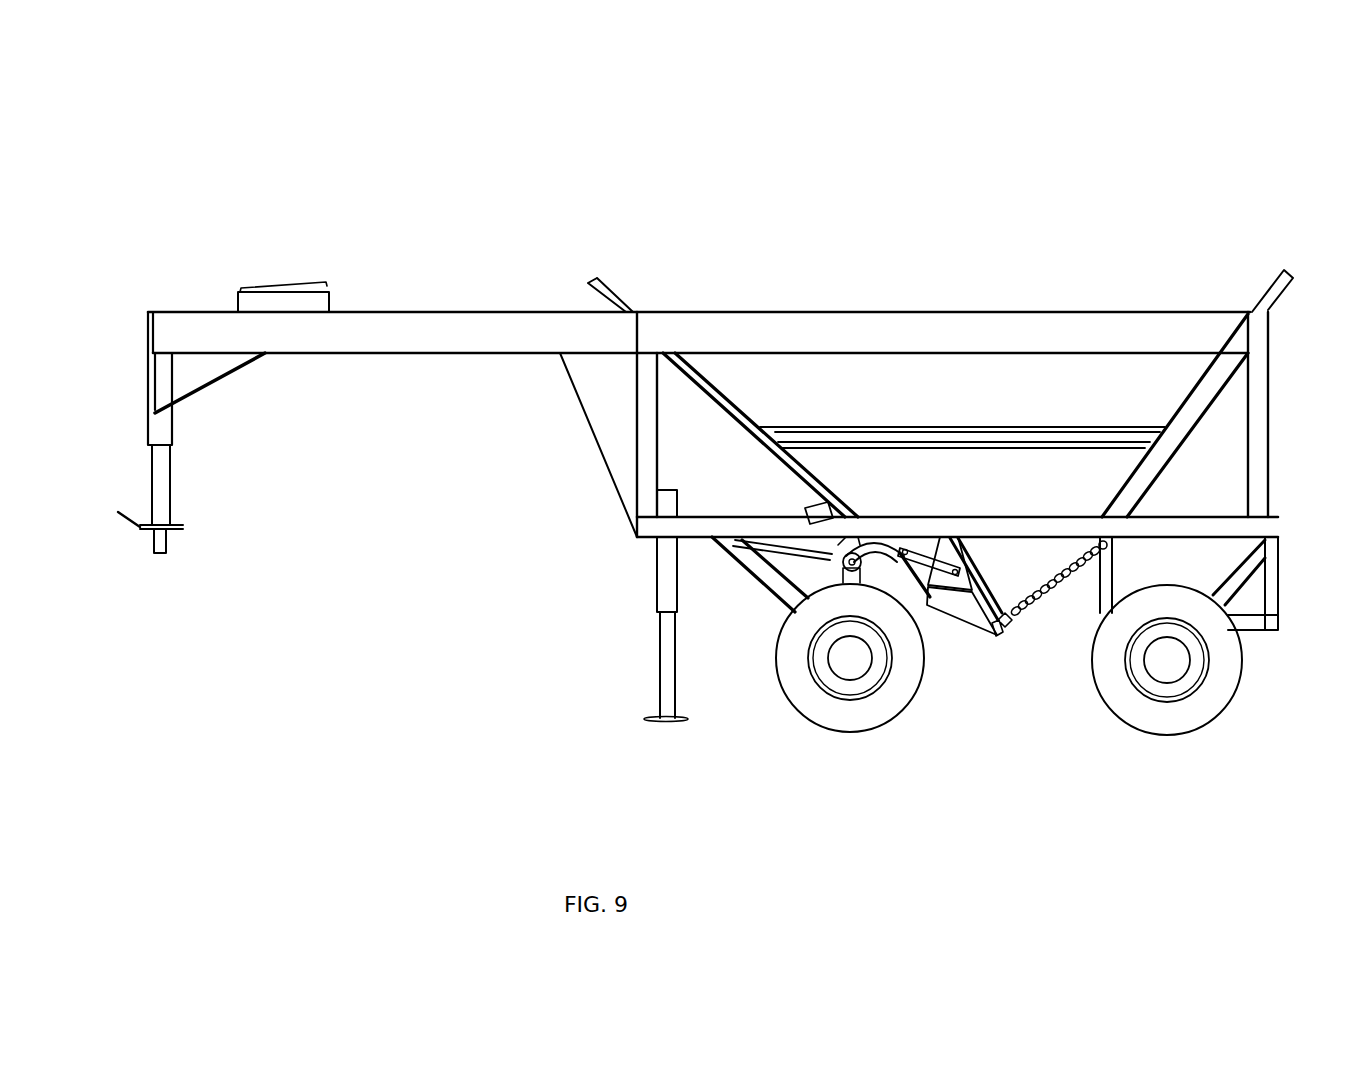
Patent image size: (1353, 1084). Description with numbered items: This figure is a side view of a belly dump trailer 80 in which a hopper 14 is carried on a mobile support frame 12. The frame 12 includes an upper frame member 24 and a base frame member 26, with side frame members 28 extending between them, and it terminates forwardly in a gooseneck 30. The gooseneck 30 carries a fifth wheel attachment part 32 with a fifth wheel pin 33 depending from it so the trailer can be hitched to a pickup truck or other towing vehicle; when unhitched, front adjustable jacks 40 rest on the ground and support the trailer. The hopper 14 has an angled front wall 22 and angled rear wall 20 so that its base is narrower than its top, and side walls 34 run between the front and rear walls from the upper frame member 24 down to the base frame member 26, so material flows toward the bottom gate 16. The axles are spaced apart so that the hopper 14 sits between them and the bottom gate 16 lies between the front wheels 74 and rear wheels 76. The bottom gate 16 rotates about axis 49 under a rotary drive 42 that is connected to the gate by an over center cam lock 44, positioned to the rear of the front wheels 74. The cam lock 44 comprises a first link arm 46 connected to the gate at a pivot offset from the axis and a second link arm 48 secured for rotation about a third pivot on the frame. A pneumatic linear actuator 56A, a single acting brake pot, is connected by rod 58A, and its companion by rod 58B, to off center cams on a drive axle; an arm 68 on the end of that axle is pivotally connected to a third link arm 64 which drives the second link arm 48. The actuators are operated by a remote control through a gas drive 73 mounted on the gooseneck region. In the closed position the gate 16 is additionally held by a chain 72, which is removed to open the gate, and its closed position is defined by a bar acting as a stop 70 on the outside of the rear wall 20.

The trailer assembly 80 is at (371, 150).
The gooseneck 30 is at (188, 262).
The gas drive 73 is at (294, 288).
The upper frame member 24 is at (518, 328).
The front wall 22 is at (612, 300).
The hopper 14 is at (863, 300).
The side walls 34 is at (1010, 383).
The rear wall 20 is at (1287, 272).
The side frame members 28 is at (637, 452).
The mobile support frame 12 is at (545, 392).
The rotary drive 42 is at (722, 455).
The base frame member 26 is at (685, 525).
The fifth wheel attachment part 32 is at (163, 492).
The fifth wheel pin 33 is at (168, 535).
The front adjustable jacks 40 is at (657, 588).
The front wheels 74 is at (845, 722).
The rear wheels 76 is at (1215, 700).
The rod 58A is at (825, 518).
The pneumatic linear actuator 56A is at (810, 518).
The rod 58B is at (825, 564).
The arm 68 is at (862, 540).
The third link arm 64 is at (878, 532).
The second link arm 48 is at (925, 545).
The axis 49 is at (948, 555).
The first link arm 46 is at (975, 545).
The bottom gate 16 is at (975, 615).
The stop 70 is at (1010, 632).
The chain 72 is at (1048, 585).
The over center cam lock 44 is at (885, 570).